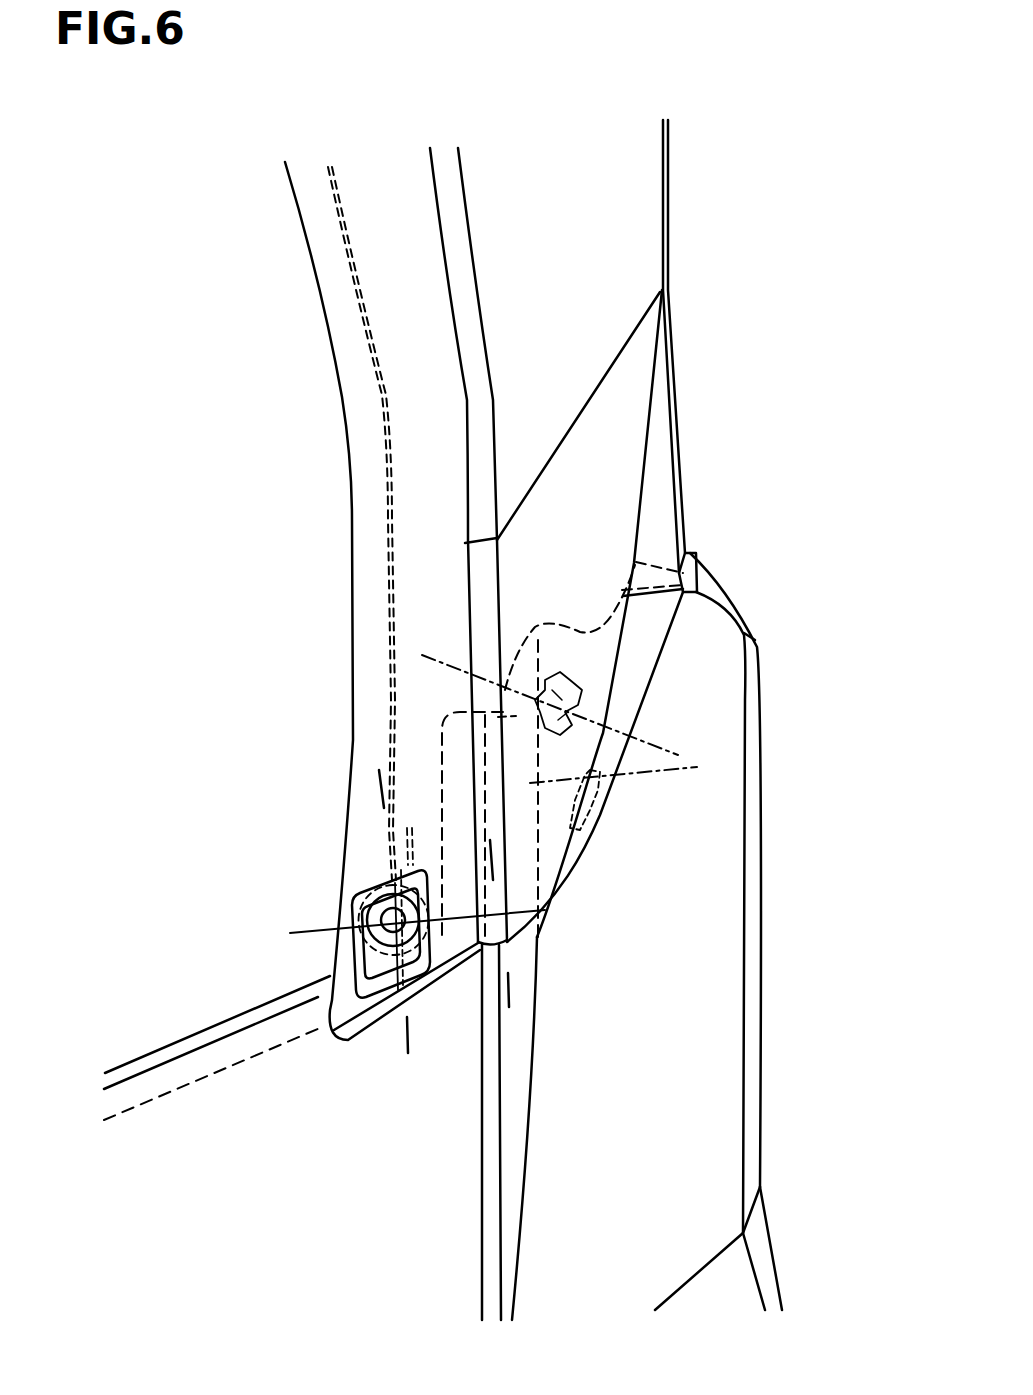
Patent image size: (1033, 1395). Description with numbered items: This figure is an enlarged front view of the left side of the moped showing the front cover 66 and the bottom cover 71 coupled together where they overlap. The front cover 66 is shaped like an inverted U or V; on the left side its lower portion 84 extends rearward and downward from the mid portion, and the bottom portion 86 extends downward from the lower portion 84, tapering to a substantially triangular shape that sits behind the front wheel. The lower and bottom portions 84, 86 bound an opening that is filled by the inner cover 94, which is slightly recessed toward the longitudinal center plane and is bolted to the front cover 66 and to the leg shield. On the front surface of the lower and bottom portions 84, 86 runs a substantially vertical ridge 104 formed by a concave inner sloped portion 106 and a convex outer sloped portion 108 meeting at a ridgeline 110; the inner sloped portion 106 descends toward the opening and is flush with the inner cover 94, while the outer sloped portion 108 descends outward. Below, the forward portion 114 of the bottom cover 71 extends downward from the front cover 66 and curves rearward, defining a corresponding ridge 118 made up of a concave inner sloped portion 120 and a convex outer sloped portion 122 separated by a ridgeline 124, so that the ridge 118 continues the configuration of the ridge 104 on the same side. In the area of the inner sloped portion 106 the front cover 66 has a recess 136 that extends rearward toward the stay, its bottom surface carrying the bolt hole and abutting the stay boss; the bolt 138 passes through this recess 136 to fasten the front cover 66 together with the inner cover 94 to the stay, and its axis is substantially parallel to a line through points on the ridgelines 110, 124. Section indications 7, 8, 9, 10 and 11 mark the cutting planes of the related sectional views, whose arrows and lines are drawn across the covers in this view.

The front cover 66 is at (706, 266).
The bottom cover 71 is at (791, 1139).
The lower portion 84 is at (676, 164).
The bottom portion 86 is at (684, 642).
The inner cover 94 is at (204, 614).
The ridge 104 is at (504, 338).
The inner sloped portion 106 is at (390, 418).
The outer sloped portion 108 is at (623, 452).
The ridgeline 110 is at (468, 300).
The forward portion 114 is at (772, 1047).
The ridge 118 is at (561, 1075).
The inner sloped portion 120 is at (336, 1133).
The outer sloped portion 122 is at (725, 953).
The ridgeline 124 is at (493, 1177).
The recess 136 is at (373, 945).
The bolt 138 is at (400, 912).
The section line 7 is at (296, 917).
The section line 8 is at (504, 852).
The section line 9 is at (549, 800).
The section line 10 is at (443, 650).
The section line 11 is at (395, 779).